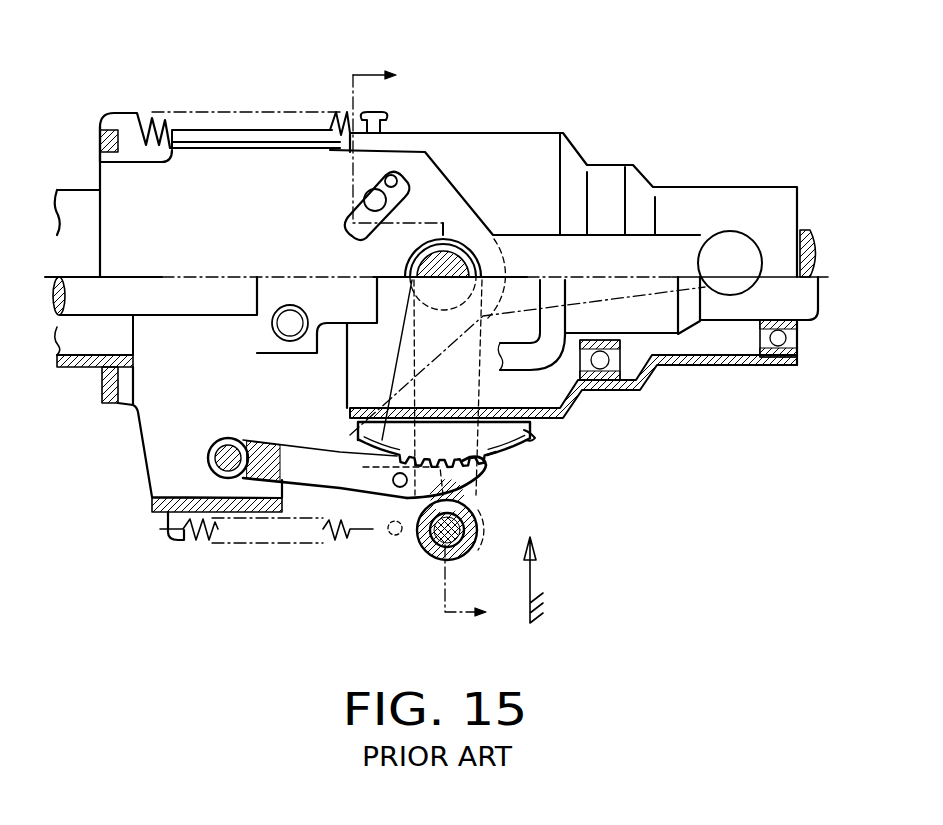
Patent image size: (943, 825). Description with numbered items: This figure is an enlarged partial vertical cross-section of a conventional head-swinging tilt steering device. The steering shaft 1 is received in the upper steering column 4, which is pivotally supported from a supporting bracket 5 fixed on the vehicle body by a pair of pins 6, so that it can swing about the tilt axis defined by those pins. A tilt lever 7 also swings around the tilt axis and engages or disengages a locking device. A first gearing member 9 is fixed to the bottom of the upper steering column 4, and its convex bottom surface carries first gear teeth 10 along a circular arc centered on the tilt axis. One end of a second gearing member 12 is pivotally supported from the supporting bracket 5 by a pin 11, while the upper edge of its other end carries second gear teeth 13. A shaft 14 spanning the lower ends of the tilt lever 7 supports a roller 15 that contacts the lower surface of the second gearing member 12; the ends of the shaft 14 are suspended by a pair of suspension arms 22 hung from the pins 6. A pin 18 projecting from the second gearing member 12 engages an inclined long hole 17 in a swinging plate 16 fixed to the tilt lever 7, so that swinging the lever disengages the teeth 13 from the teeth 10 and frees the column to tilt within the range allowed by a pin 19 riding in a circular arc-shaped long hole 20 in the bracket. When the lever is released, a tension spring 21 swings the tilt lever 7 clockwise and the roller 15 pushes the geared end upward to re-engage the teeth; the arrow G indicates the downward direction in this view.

The steering shaft 1 is at (805, 312).
The upper steering column 4 is at (503, 142).
The supporting bracket 5 is at (254, 167).
The pin 6 is at (463, 253).
The tilt lever 7 is at (600, 243).
The first gearing member 9 is at (528, 430).
The first gear teeth 10 is at (500, 470).
The pin 11 is at (232, 470).
The second gearing member 12 is at (307, 478).
The second gear teeth 13 is at (450, 470).
The shaft 14 is at (434, 560).
The roller 15 is at (466, 560).
The swinging plate 16 is at (350, 437).
The inclined long hole 17 is at (362, 515).
The pin 18 is at (392, 490).
The pin 19 is at (363, 192).
The circular arc-shaped long hole 20 is at (393, 176).
The tension spring 21 is at (184, 555).
The suspension arm 22 is at (520, 440).
The gravity direction G is at (526, 590).